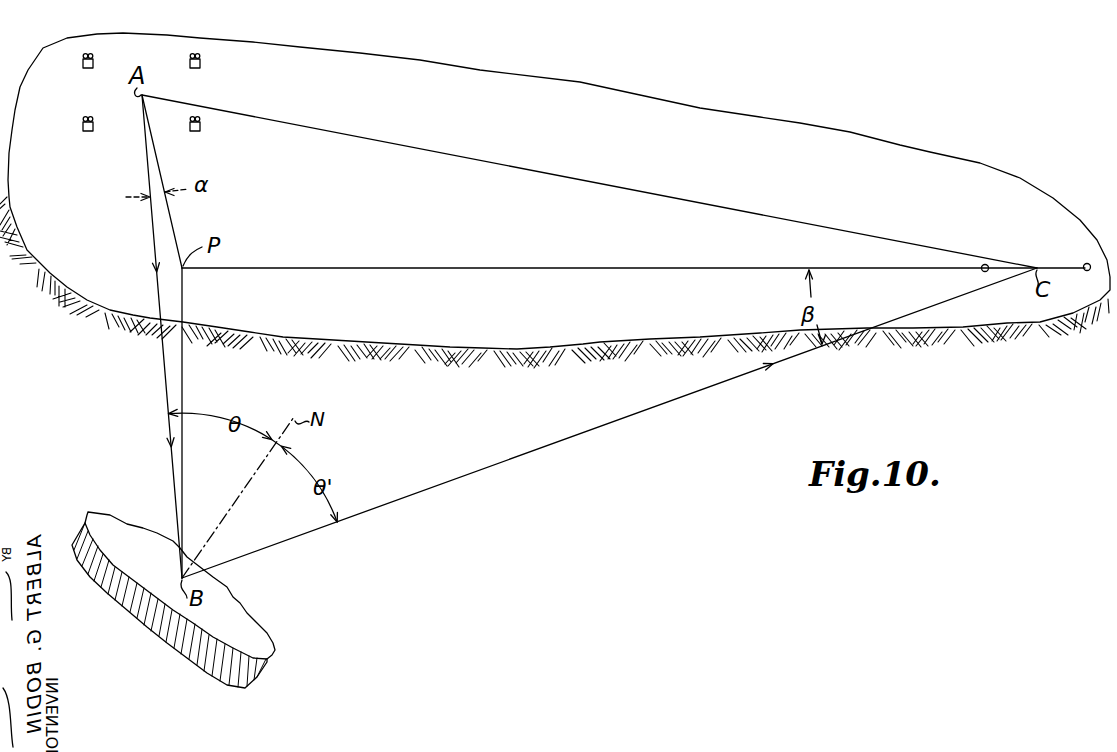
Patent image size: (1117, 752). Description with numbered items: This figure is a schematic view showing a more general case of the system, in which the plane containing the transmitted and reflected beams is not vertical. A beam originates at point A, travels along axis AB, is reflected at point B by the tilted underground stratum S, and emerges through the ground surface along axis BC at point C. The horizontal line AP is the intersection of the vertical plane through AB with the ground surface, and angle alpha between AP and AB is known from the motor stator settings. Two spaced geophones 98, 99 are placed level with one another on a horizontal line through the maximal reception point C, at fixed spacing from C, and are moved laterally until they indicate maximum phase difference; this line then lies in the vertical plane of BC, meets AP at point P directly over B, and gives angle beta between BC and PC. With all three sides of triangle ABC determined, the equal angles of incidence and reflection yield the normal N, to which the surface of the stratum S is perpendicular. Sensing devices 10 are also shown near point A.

The sensing devices 10 is at (90, 68).
The geophone 98 is at (986, 264).
The geophone 99 is at (1086, 263).
The underground stratum S is at (249, 617).